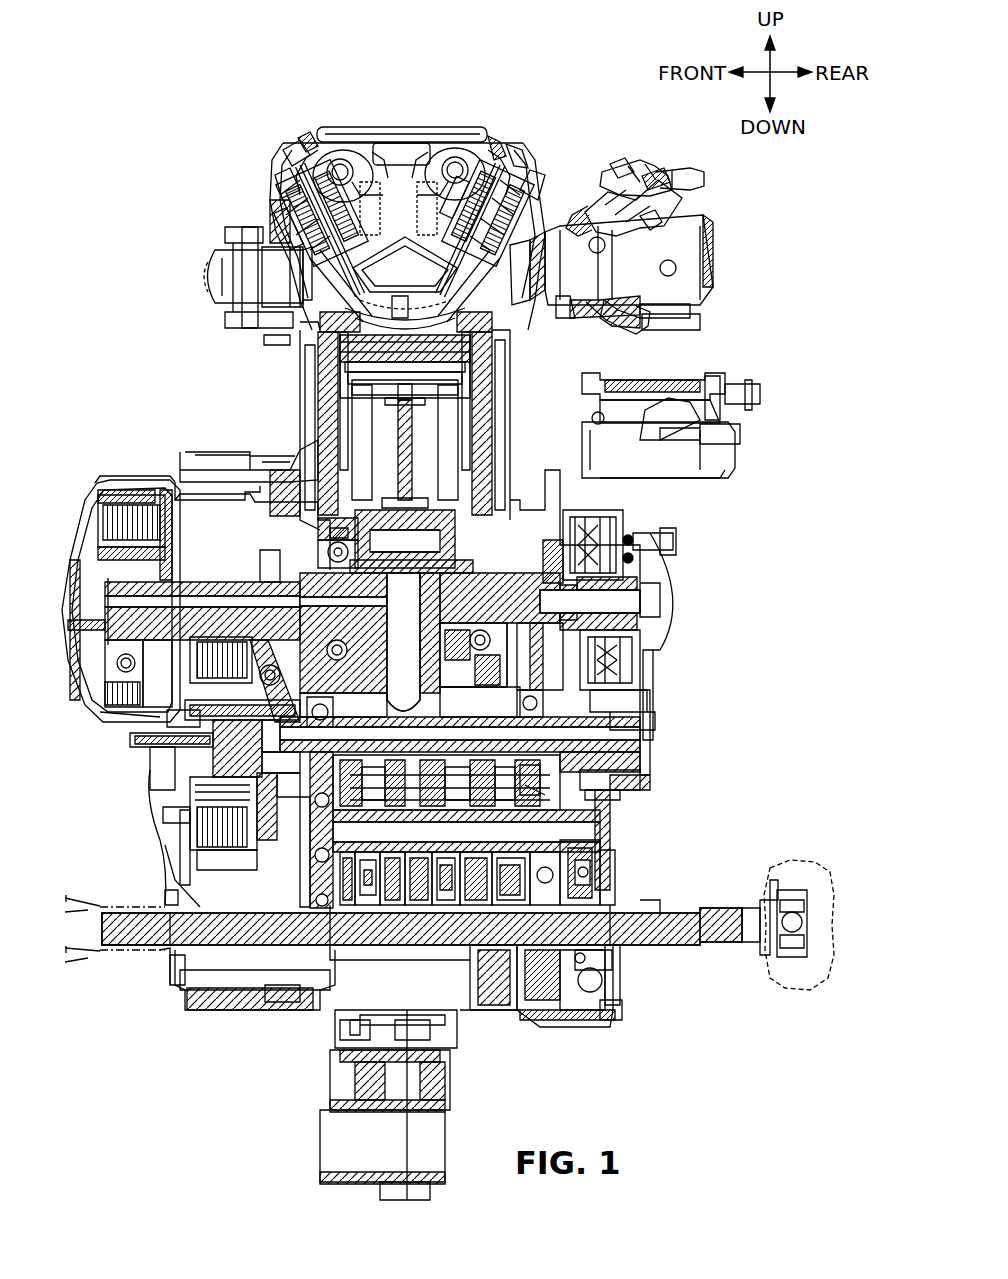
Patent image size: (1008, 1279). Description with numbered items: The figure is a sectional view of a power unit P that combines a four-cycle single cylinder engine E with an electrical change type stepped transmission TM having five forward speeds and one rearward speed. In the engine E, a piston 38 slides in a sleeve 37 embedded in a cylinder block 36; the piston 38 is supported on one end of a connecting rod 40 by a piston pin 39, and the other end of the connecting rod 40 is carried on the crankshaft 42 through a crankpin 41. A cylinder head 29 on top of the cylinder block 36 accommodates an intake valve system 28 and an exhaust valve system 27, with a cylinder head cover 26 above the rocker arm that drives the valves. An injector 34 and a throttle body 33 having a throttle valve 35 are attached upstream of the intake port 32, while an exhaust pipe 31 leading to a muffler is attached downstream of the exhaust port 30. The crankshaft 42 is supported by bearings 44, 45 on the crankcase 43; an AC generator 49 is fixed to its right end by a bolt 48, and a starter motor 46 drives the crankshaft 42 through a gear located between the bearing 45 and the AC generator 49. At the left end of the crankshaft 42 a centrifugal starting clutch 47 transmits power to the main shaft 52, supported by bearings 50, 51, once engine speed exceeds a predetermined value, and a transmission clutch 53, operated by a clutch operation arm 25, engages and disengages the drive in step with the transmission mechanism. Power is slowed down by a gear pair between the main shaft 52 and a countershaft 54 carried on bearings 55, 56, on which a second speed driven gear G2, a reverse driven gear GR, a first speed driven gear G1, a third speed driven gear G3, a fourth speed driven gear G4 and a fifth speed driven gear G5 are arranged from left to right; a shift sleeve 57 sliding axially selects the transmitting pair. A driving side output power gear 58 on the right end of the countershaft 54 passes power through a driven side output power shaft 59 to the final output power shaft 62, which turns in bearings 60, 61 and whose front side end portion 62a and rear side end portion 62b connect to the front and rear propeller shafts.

The clutch operation arm 25 is at (158, 838).
The cylinder head cover 26 is at (342, 127).
The exhaust valve system 27 is at (308, 143).
The intake valve system 28 is at (494, 142).
The cylinder head 29 is at (258, 226).
The exhaust port 30 is at (330, 300).
The exhaust pipe 31 is at (222, 250).
The intake port 32 is at (545, 310).
The throttle body 33 is at (679, 161).
The injector 34 is at (605, 195).
The throttle valve 35 is at (632, 316).
The cylinder block 36 is at (304, 385).
The sleeve 37 is at (494, 420).
The piston 38 is at (332, 352).
The piston pin 39 is at (438, 390).
The connecting rod 40 is at (395, 478).
The crankpin 41 is at (422, 535).
The crankshaft 42 is at (224, 585).
The crankcase 43 is at (300, 468).
The bearing 44 is at (330, 548).
The bearing 45 is at (675, 546).
The starter motor 46 is at (140, 497).
The starting clutch 47 is at (107, 501).
The bolt 48 is at (672, 598).
The AC generator 49 is at (640, 680).
The bearing 50 is at (308, 706).
The bearing 51 is at (640, 758).
The main shaft 52 is at (175, 752).
The transmission clutch 53 is at (175, 908).
The countershaft 54 is at (275, 830).
The bearing 55 is at (310, 855).
The bearing 56 is at (610, 870).
The shift sleeve 57 is at (360, 905).
The driving side output power gear 58 is at (580, 778).
The driven side output power shaft 59 is at (560, 990).
The bearing 60 is at (610, 965).
The bearing 61 is at (278, 975).
The final output power shaft 62 is at (672, 960).
The front side end portion 62a is at (120, 948).
The rear side end portion 62b is at (728, 940).
The first speed driven gear G1 is at (418, 905).
The second speed driven gear G2 is at (342, 907).
The third speed driven gear G3 is at (437, 905).
The fourth speed driven gear G4 is at (470, 905).
The fifth speed driven gear G5 is at (500, 905).
The reverse driven gear GR is at (392, 905).
The engine E is at (296, 414).
The transmission TM is at (558, 738).
The power unit P is at (750, 298).